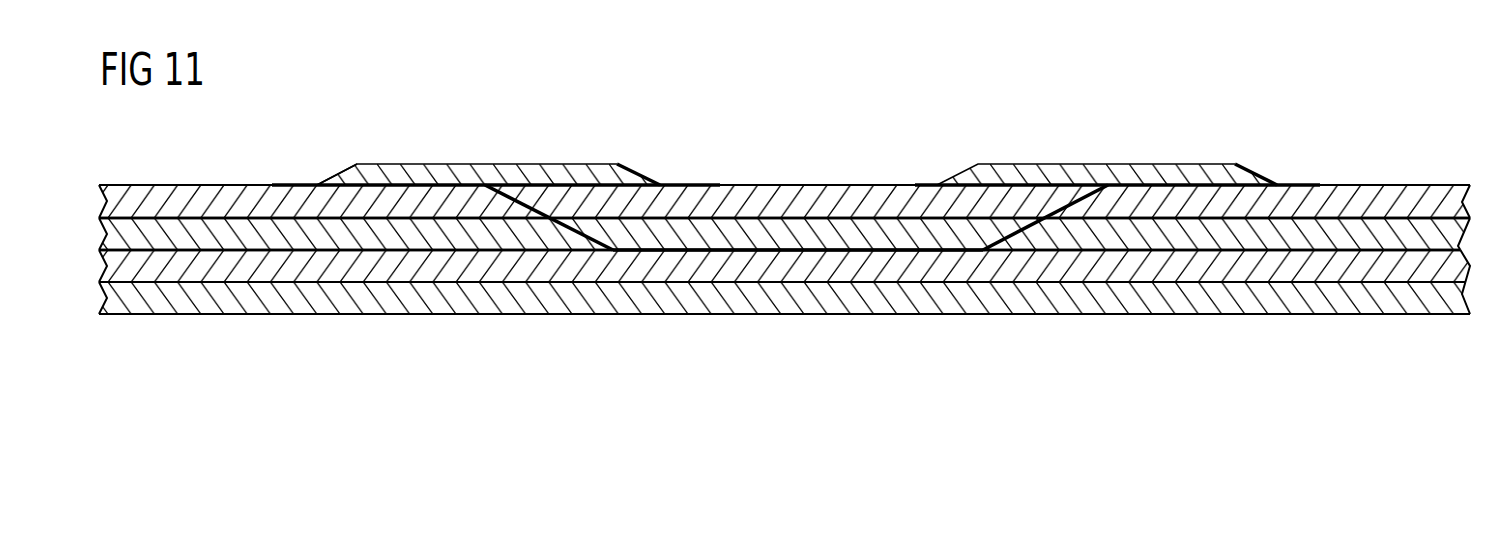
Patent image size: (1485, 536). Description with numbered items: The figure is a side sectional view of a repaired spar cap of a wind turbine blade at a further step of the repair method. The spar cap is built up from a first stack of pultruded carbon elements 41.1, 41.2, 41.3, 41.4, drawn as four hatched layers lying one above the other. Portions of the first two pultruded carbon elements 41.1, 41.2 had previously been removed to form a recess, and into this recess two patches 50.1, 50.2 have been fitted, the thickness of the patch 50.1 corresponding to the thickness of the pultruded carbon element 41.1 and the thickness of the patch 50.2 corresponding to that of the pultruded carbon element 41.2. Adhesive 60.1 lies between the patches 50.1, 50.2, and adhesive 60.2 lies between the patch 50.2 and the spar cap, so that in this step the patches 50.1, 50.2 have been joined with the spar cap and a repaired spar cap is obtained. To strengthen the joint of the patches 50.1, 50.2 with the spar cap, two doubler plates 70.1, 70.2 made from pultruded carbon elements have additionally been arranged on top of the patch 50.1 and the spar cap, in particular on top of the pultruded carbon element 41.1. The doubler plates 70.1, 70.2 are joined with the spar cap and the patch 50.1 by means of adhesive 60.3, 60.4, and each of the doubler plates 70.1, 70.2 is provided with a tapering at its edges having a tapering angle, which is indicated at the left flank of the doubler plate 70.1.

The pultruded carbon element 41.1 is at (207, 205).
The pultruded carbon element 41.2 is at (290, 227).
The pultruded carbon element 41.3 is at (368, 267).
The pultruded carbon element 41.4 is at (453, 297).
The patch 50.1 is at (742, 200).
The patch 50.2 is at (877, 238).
The adhesive 60.1 is at (850, 222).
The adhesive 60.2 is at (707, 250).
The adhesive 60.3 is at (573, 185).
The adhesive 60.4 is at (1012, 185).
The doubler plate 70.1 is at (463, 163).
The doubler plate 70.2 is at (1173, 163).